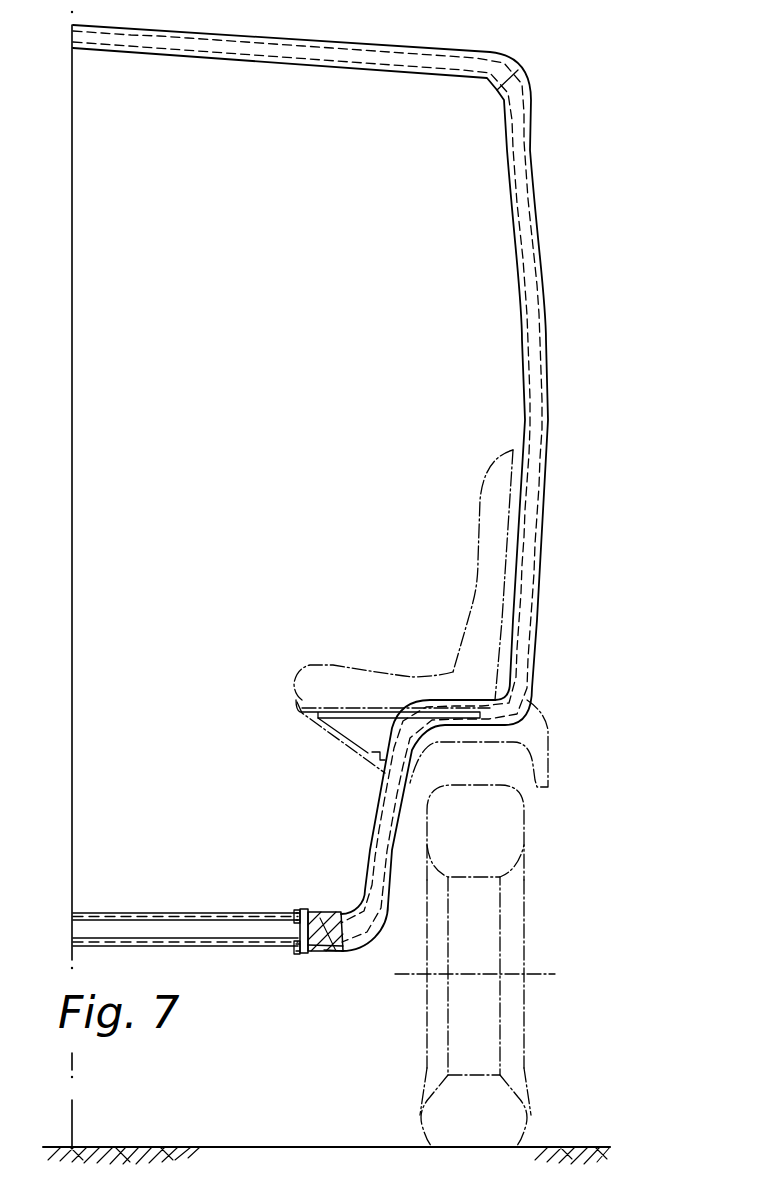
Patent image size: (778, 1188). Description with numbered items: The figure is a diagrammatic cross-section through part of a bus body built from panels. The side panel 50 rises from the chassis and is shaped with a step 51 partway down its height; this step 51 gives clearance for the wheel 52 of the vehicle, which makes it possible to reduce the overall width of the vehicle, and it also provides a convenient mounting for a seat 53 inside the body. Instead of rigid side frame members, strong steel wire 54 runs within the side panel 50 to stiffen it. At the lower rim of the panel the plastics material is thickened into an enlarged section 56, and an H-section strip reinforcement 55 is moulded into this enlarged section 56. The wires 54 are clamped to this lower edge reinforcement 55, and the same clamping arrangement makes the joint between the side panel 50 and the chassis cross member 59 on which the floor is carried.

The side panel 50 is at (545, 250).
The step 51 is at (444, 692).
The wheel 52 is at (525, 908).
The seat 53 is at (333, 668).
The steel wire 54 is at (545, 317).
The H-section strip reinforcement 55 is at (302, 927).
The enlarged section of plastics 56 is at (343, 957).
The chassis cross member 59 is at (173, 915).